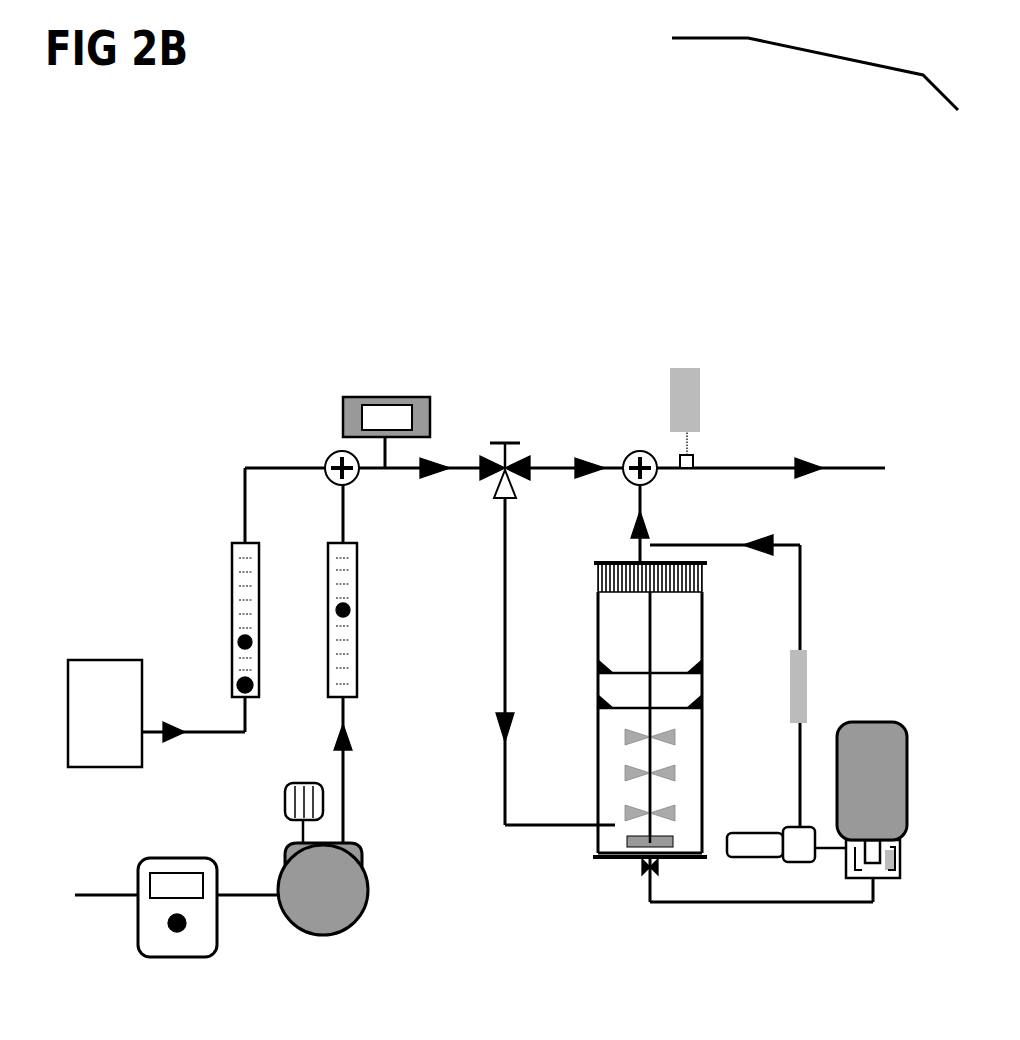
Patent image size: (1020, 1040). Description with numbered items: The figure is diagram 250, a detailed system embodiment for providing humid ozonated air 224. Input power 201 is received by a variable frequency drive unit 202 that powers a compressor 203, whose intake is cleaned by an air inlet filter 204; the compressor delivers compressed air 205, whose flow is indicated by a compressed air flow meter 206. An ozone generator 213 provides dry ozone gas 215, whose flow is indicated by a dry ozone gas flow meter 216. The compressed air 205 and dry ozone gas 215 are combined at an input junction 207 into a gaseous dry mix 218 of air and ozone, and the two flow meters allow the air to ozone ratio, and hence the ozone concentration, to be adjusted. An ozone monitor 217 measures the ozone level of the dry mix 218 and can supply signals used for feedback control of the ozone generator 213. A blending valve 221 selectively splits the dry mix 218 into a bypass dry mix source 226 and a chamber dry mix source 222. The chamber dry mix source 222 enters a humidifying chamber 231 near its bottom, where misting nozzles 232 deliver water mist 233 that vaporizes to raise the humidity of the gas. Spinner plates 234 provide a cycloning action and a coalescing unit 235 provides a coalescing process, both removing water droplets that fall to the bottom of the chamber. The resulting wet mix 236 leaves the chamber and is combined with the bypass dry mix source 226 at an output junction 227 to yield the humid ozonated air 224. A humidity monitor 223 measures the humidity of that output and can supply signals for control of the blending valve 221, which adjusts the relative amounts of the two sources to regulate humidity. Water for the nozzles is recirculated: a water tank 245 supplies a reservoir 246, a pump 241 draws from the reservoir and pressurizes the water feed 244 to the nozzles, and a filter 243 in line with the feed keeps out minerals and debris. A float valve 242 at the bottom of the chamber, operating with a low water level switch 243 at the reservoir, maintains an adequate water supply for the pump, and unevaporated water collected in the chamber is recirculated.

The input power 201 is at (107, 890).
The variable frequency drive unit 202 is at (152, 938).
The compressor 203 is at (312, 920).
The air inlet filter 204 is at (283, 803).
The compressed air 205 is at (345, 800).
The compressed air flow meter 206 is at (358, 590).
The input junction 207 is at (328, 456).
The ozone generator 213 is at (105, 713).
The dry ozone gas 215 is at (202, 727).
The dry ozone gas flow meter 216 is at (231, 593).
The ozone monitor 217 is at (358, 395).
The dry mix 218 is at (370, 471).
The blending valve 221 is at (505, 435).
The chamber dry mix source 222 is at (528, 828).
The humidity monitor 223 is at (677, 377).
The humid ozonated air 224 is at (840, 463).
The bypass dry mix source 226 is at (550, 464).
The output junction 227 is at (626, 450).
The humidifying chamber 231 is at (620, 562).
The misting nozzles 232 is at (658, 770).
The water mist 233 is at (617, 763).
The spinner plates 234 is at (597, 674).
The coalescing unit 235 is at (596, 575).
The wet mix 236 is at (643, 490).
The pump 241 is at (786, 832).
The float valve 242 is at (642, 872).
The filter / low water level switch 243 is at (808, 690).
The water feed 244 is at (801, 556).
The water tank 245 is at (870, 727).
The reservoir 246 is at (878, 868).
The diagram 250 is at (815, 74).